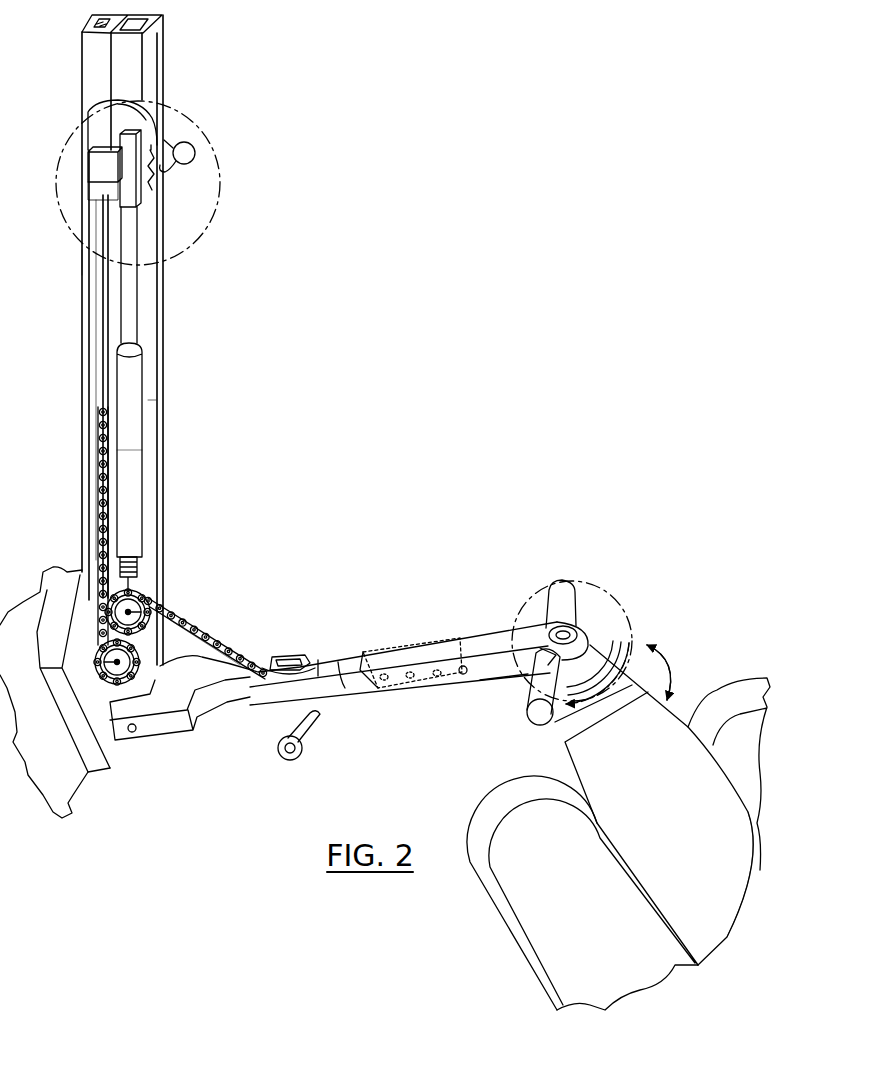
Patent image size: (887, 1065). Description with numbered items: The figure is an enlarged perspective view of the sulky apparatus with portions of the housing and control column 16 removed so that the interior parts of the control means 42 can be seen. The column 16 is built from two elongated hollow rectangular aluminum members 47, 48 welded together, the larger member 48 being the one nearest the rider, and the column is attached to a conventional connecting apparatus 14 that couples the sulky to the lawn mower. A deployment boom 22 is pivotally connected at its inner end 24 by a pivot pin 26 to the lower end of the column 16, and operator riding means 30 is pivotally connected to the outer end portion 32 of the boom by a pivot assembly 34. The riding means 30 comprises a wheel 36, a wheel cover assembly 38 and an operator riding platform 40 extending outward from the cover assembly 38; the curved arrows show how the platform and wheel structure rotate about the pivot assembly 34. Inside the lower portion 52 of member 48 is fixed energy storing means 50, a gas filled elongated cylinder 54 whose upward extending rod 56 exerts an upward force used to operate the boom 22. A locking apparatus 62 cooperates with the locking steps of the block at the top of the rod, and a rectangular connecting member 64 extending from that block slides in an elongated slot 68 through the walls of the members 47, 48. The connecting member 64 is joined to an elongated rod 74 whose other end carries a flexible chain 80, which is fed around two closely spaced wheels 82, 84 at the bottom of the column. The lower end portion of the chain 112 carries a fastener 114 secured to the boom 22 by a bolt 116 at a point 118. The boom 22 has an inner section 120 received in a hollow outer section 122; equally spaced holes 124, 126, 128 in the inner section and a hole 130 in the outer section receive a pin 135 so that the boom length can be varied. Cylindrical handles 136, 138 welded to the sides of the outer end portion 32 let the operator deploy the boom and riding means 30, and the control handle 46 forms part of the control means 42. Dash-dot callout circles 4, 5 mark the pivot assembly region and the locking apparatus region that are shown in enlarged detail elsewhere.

The detail view circle for FIG. 4 is at (632, 610).
The detail view circle for FIG. 5 is at (152, 155).
The connecting apparatus 14 is at (95, 765).
The housing and control column 16 is at (82, 318).
The deployment boom 22 is at (298, 693).
The inner end 24 is at (185, 735).
The pivot pin 26 is at (133, 733).
The operator riding means 30 is at (672, 688).
The outer end portion 32 is at (520, 672).
The pivot assembly 34 is at (588, 607).
The wheel 36 is at (757, 906).
The wheel cover assembly 38 is at (750, 818).
The operator riding platform 40 is at (740, 748).
The control means 42 is at (172, 575).
The control handle 46 is at (195, 148).
The elongated hollow rectangular cross section aluminum member 47 is at (80, 266).
The elongated hollow rectangular cross section aluminum member 48 is at (175, 222).
The energy storing means 50 is at (152, 489).
The lower portion 52 is at (130, 468).
The gas filled elongated cylinder 54 is at (145, 443).
The elongated rod 56 is at (132, 322).
The locking apparatus 62 is at (178, 125).
The connecting member 64 is at (106, 150).
The elongated slot 68 is at (90, 176).
The elongated rod 74 is at (100, 352).
The chain 80 is at (97, 490).
The wheel 82 is at (110, 670).
The wheel 84 is at (150, 612).
The chain 112 is at (198, 630).
The fastener 114 is at (313, 663).
The bolt 116 is at (288, 657).
The point 118 is at (323, 662).
The inner section 120 is at (338, 678).
The outer section 122 is at (492, 637).
The hole 124 is at (384, 682).
The hole 126 is at (410, 680).
The hole 128 is at (437, 678).
The hole 130 is at (463, 675).
The pin 135 is at (308, 745).
The handle 136 is at (538, 712).
The handle 138 is at (562, 592).